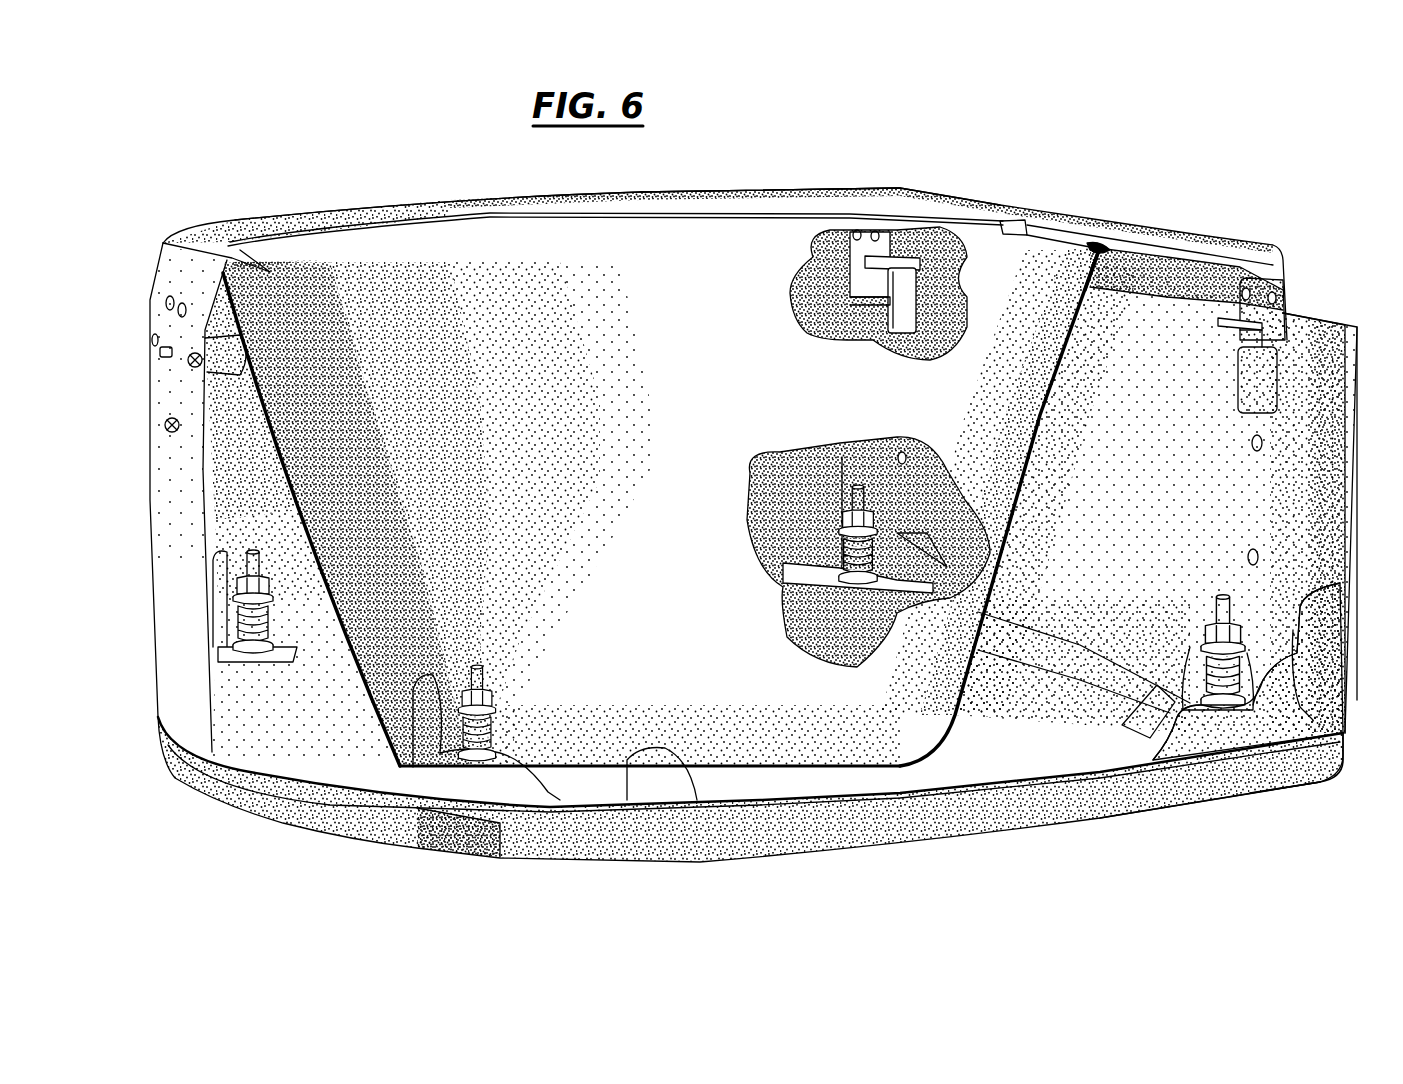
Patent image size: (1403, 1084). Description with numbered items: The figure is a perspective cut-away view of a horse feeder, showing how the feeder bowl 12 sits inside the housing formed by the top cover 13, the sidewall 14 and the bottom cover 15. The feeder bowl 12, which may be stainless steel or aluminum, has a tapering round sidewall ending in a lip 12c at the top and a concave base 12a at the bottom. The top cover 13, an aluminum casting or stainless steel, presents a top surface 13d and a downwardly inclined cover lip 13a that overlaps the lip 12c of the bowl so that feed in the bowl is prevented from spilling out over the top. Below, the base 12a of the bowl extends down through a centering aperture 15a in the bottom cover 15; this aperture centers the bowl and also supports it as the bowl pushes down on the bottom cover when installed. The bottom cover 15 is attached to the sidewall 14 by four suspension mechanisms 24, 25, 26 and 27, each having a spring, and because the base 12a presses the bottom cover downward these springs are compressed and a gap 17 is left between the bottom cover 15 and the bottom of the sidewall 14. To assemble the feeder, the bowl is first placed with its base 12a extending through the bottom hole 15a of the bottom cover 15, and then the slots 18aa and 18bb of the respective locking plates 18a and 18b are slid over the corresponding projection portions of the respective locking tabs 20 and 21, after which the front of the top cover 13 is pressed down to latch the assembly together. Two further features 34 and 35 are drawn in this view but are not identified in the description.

The feeder bowl 12 is at (270, 470).
The concave base 12a is at (750, 740).
The lip 12c is at (1080, 315).
The top cover 13 is at (212, 222).
The cover lip 13a is at (1003, 208).
The top surface 13d is at (803, 195).
The sidewall 14 is at (1275, 493).
The bottom cover 15 is at (1095, 816).
The centering aperture 15a is at (697, 800).
The gap 17 is at (1335, 737).
The locking plate 18a is at (1240, 350).
The slot 18aa is at (1285, 300).
The locking plate 18b is at (870, 228).
The slot 18bb is at (862, 292).
The locking tab 20 is at (1215, 323).
The locking tab 21 is at (930, 270).
The suspension mechanism 24 is at (838, 543).
The suspension mechanism 25 is at (1199, 665).
The suspension mechanism 26 is at (278, 617).
The suspension mechanism 27 is at (496, 678).
The right boss 34 is at (1300, 665).
The flange bottom edge 35 is at (1200, 763).